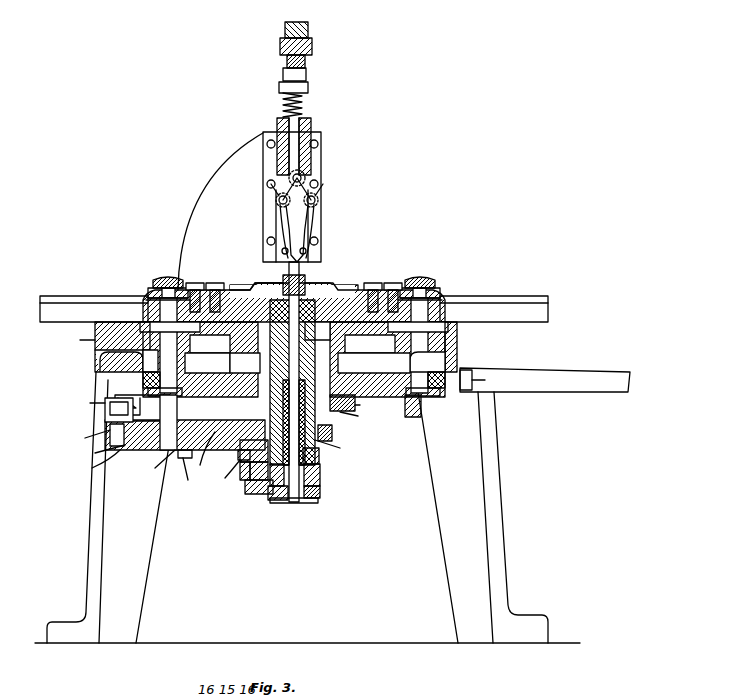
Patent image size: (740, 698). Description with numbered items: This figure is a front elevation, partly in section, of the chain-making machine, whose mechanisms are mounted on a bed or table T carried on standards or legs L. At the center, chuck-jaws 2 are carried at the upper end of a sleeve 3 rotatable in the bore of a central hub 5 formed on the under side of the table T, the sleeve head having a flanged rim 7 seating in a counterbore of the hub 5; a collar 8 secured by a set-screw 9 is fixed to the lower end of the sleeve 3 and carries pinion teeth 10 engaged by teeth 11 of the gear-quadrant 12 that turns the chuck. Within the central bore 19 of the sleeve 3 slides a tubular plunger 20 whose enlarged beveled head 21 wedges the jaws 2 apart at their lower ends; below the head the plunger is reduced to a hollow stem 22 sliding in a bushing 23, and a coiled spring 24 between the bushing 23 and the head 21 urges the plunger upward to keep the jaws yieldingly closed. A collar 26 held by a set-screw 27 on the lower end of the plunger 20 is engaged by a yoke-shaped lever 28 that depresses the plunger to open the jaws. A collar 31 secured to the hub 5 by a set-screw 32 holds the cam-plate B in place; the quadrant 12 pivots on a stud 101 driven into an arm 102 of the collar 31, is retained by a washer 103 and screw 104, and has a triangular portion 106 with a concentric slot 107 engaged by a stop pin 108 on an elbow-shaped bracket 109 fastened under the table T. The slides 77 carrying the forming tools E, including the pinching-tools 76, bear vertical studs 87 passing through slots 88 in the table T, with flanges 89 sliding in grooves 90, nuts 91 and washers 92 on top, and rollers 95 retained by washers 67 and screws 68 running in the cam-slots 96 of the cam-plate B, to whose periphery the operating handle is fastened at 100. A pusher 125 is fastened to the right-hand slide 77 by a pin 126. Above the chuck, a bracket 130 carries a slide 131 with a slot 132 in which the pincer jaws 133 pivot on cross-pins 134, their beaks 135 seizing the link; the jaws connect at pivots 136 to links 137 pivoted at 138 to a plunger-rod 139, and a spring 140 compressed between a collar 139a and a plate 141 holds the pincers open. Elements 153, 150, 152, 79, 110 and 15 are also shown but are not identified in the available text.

The lock nut 153 is at (311, 32).
The adjusting nut 150 is at (309, 49).
The stem 152 is at (312, 65).
The plunger-rod 139 is at (311, 79).
The collar 139a is at (279, 88).
The spring 140 is at (314, 104).
The plate 141 is at (311, 140).
The slide 131 is at (317, 146).
The slot 132 is at (308, 168).
The pincer jaws 133 is at (293, 200).
The cross-pins 134 is at (295, 233).
The beaks 135 is at (293, 245).
The pivot 136 is at (293, 197).
The links 137 is at (294, 165).
The pivot 138 is at (268, 172).
The standard or bracket 130 is at (210, 228).
The pusher-element 125 is at (308, 292).
The pin or rivet 126 is at (326, 327).
The pinching-tools 76 is at (294, 331).
The slides 77 is at (294, 309).
The screw 79 is at (294, 284).
The vertical studs 87 is at (289, 321).
The slots 88 is at (260, 359).
The flanges 89 is at (294, 334).
The grooves 90 is at (291, 343).
The nuts 91 is at (295, 281).
The washers 92 is at (292, 288).
The rollers 95 is at (288, 392).
The cam-slots 96 is at (282, 380).
The washers 67 is at (281, 407).
The screws 68 is at (282, 413).
The handle fastening point 100 is at (491, 380).
The pivot stud 101 is at (185, 426).
The arm 102 is at (201, 454).
The washer 103 is at (151, 462).
The screw 104 is at (180, 470).
The triangular portion 106 is at (90, 452).
The slot 107 is at (91, 435).
The pin 108 is at (87, 462).
The elbow-shaped bracket 109 is at (96, 407).
The lug 110 is at (230, 468).
The pinion teeth 10 is at (257, 452).
The teeth 11 is at (432, 426).
The gear-quadrant 12 is at (254, 489).
The chamber 15 is at (210, 344).
The central bore 19 is at (236, 363).
The enlarged head 21 is at (207, 363).
The sleeve or bushing 3 is at (370, 344).
The central hub 5 is at (374, 363).
The chuck-jaws 2 is at (296, 317).
The flanged rim 7 is at (296, 328).
The collar 8 is at (332, 445).
The set-screw 9 is at (335, 431).
The tubular plunger 20 is at (322, 458).
The hollow stem 22 is at (294, 502).
The bushing 23 is at (310, 422).
The coiled spring 24 is at (354, 397).
The collar 26 is at (304, 503).
The set-screw 27 is at (305, 491).
The yoke-shaped lever 28 is at (287, 487).
The collar 31 is at (358, 415).
The set-screw 32 is at (367, 403).
The cam-plate B is at (388, 415).
The tools E is at (298, 274).
The legs L is at (297, 507).
The table T is at (78, 340).